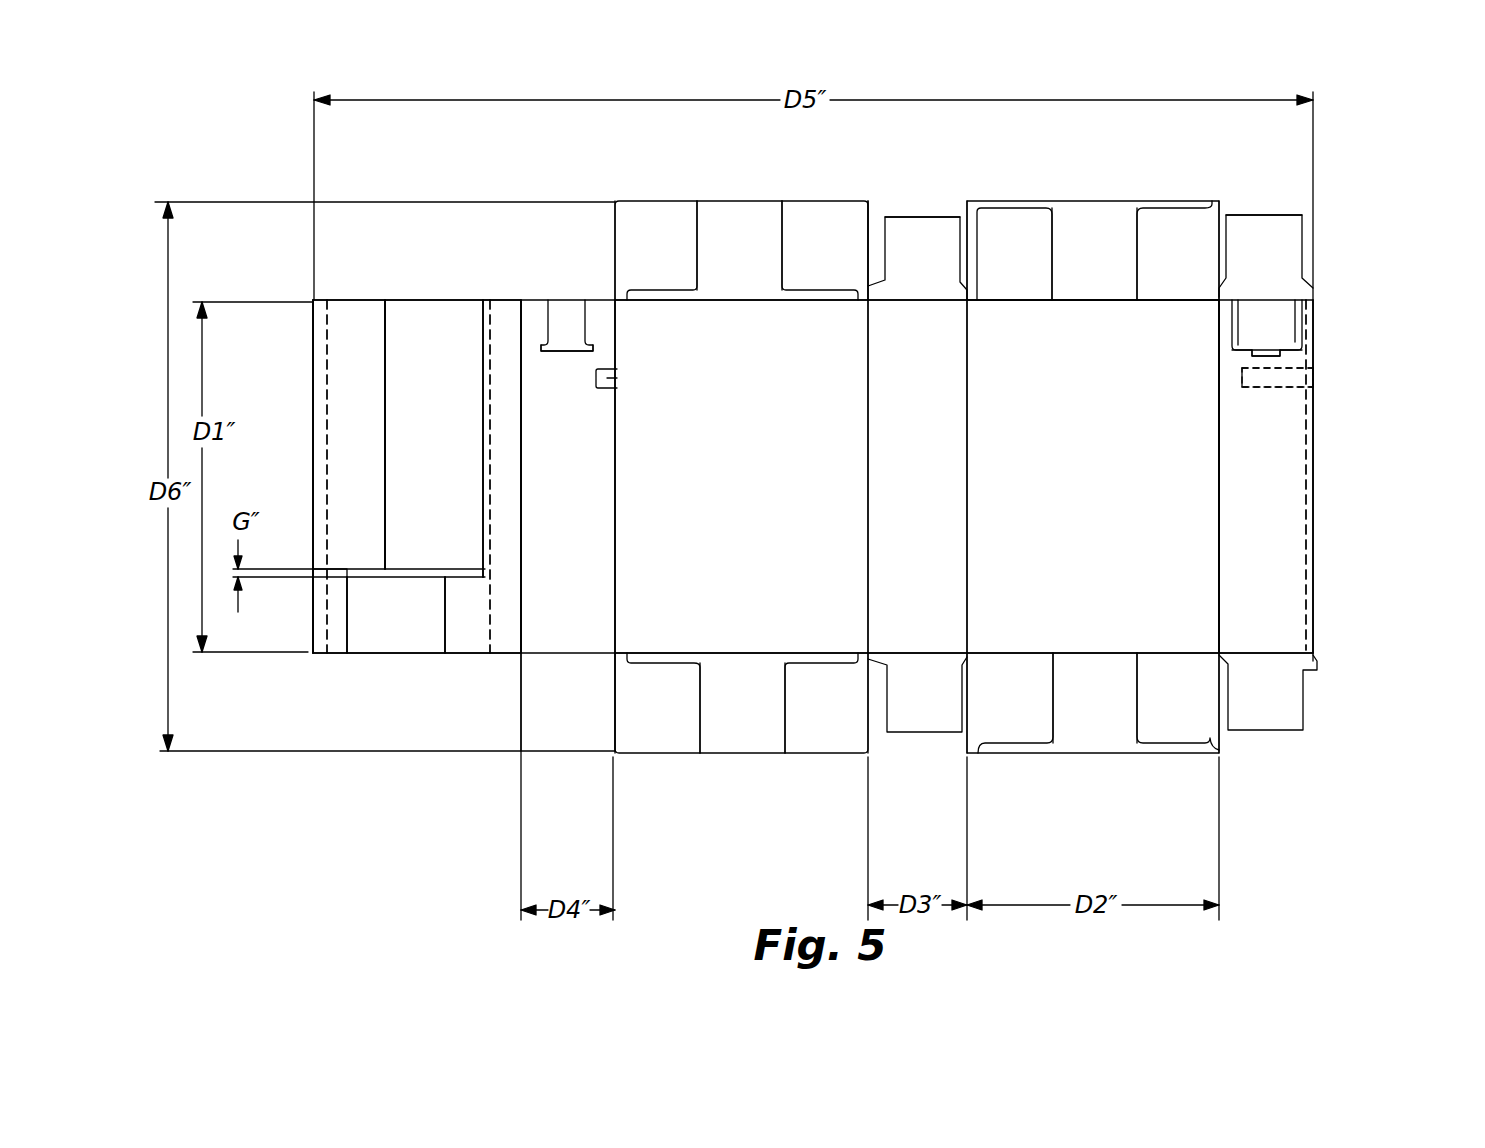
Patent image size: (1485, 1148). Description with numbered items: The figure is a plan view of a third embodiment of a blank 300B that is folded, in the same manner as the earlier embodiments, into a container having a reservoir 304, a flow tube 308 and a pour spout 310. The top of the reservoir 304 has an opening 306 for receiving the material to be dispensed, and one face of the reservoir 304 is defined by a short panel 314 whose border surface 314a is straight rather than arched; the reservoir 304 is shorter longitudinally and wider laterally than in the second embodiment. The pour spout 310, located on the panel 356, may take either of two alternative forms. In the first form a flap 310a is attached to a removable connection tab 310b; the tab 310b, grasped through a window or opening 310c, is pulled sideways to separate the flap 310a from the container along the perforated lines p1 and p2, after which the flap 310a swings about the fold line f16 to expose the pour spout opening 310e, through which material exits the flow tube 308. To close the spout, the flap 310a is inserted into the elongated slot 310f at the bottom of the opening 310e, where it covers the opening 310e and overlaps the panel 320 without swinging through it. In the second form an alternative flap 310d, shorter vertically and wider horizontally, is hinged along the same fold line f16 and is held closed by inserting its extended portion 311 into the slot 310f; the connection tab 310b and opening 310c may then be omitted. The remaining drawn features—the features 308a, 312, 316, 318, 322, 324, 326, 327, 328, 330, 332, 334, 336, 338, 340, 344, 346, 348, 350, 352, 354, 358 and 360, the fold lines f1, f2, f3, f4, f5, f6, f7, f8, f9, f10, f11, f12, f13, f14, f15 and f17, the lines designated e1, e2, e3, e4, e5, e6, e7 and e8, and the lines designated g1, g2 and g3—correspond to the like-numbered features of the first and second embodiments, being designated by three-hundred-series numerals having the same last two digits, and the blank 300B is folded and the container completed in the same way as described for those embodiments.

The blank 300B is at (283, 180).
The reservoir 304 is at (271, 660).
The opening 306 is at (398, 575).
The flow tube 308 is at (428, 675).
The glue panel edge 308a is at (353, 563).
The pour spout 310 is at (1320, 244).
The flap 310a is at (1300, 360).
The removable connection tab 310b is at (1290, 383).
The window or opening 310c is at (620, 378).
The alternative flap 310d is at (1297, 317).
The pour spout opening 310e is at (570, 310).
The elongated slot 310f is at (568, 353).
The tab or extended portion 311 is at (1267, 353).
The glue flap 312 is at (353, 368).
The short panel 314 is at (377, 623).
The straight border surface 314a is at (367, 580).
The panel 316 is at (422, 357).
The panel 318 is at (467, 637).
The panel 320 is at (553, 578).
The top flap 322 is at (677, 360).
The tab 324 is at (750, 232).
The tab 326 is at (650, 232).
The edge 327 is at (838, 228).
The bottom flap 328 is at (735, 727).
The tab 330 is at (643, 727).
The tab 332 is at (807, 725).
The side flap 334 is at (918, 360).
The flap edge 336 is at (942, 228).
The side flap 338 is at (910, 725).
The top flap 340 is at (1098, 363).
The tab 344 is at (1140, 212).
The tab 346 is at (1183, 242).
The fold line 348 is at (1020, 285).
The bottom flap 350 is at (1078, 725).
The tab 352 is at (1152, 710).
The tab 354 is at (1030, 710).
The panel 356 is at (1270, 522).
The top flap 358 is at (1283, 238).
The bottom flap 360 is at (1283, 698).
The edge e1 is at (692, 232).
The edge e2 is at (783, 240).
The edge e3 is at (690, 727).
The edge e4 is at (770, 735).
The edge e5 is at (1240, 242).
The edge e6 is at (1047, 242).
The edge e7 is at (1170, 740).
The edge e8 is at (1015, 745).
The fold line f1 is at (343, 633).
The fold line f2 is at (443, 615).
The fold line f3 is at (383, 330).
The fold line f4 is at (482, 445).
The fold line f5 is at (527, 625).
The fold line f6 is at (613, 612).
The fold line f7 is at (868, 523).
The fold line f8 is at (969, 517).
The fold line f9 is at (1218, 563).
The fold line f10 is at (740, 300).
The fold line f11 is at (740, 653).
The fold line f12 is at (1082, 300).
The fold line f13 is at (1030, 653).
The fold line f14 is at (883, 300).
The fold line f15 is at (922, 653).
The fold line f16 is at (1222, 297).
The fold line f17 is at (1265, 655).
The glue line g1 is at (322, 330).
The glue line g2 is at (493, 337).
The glue line g3 is at (1310, 552).
The perforated line p1 is at (1245, 363).
The perforated line p2 is at (1257, 380).